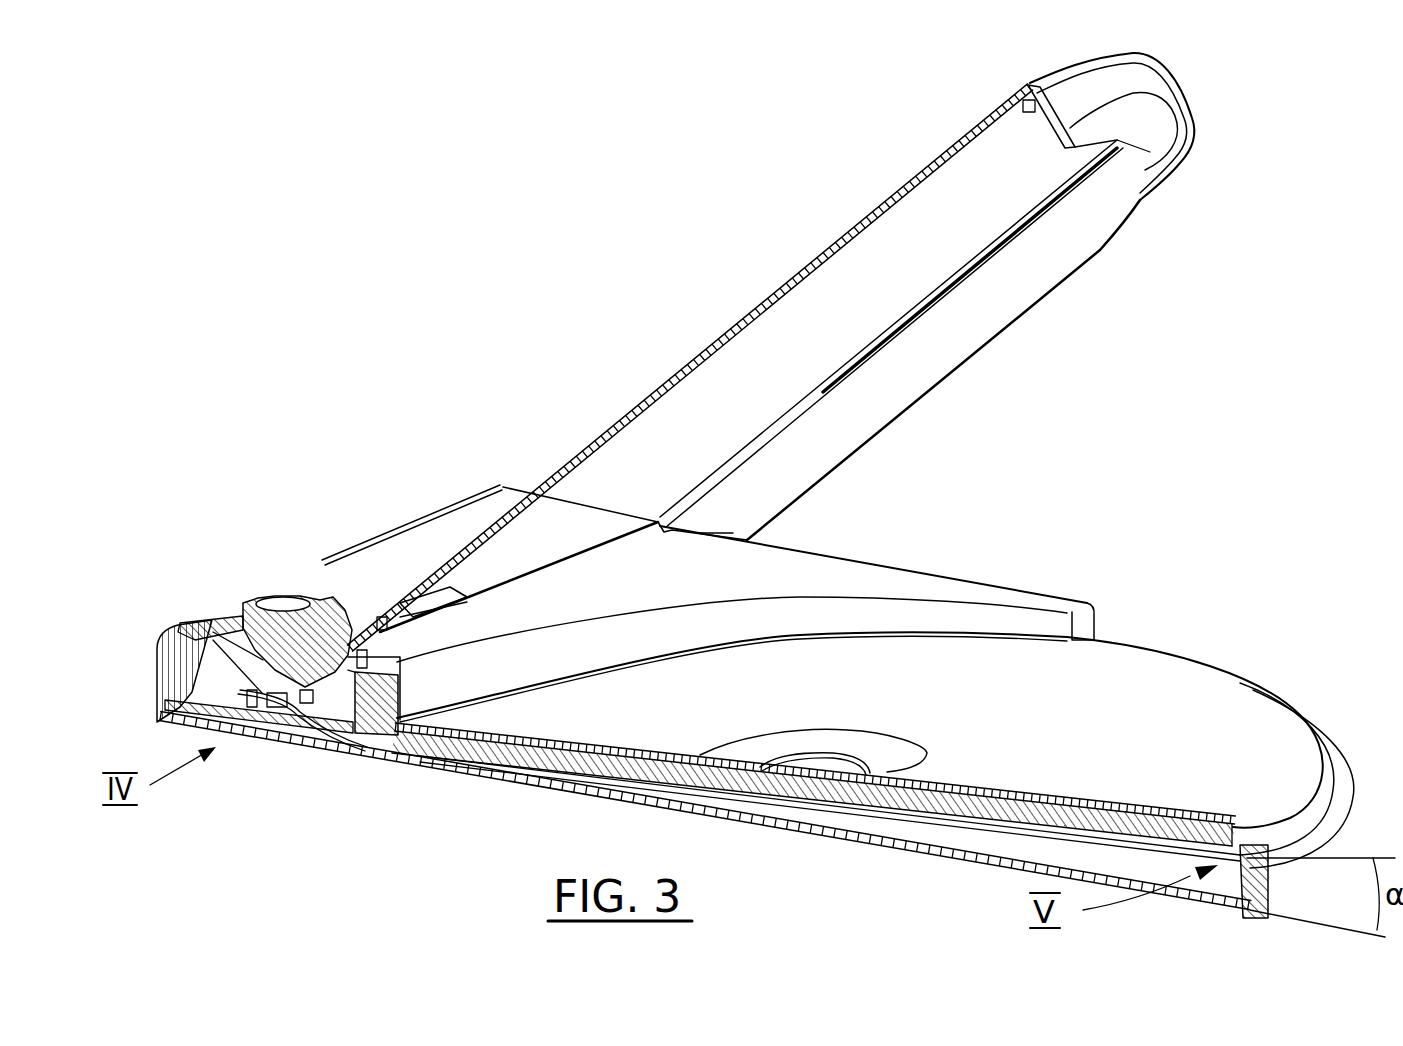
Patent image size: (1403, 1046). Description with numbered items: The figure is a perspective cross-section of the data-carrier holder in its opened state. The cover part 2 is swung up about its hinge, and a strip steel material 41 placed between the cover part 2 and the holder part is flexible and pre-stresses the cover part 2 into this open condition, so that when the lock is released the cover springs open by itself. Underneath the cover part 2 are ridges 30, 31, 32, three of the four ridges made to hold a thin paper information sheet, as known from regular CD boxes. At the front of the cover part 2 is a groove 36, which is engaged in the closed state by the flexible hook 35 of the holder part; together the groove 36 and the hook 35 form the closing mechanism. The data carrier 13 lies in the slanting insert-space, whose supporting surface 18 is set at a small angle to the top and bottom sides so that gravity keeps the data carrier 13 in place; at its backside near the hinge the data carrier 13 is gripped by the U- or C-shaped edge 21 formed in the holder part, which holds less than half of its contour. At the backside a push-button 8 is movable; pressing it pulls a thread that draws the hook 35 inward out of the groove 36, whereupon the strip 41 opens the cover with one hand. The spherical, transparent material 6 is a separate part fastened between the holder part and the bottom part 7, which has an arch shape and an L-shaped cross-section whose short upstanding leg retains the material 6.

The cover part 2 is at (1100, 250).
The spherical material 6 is at (182, 630).
The bottom part 7 is at (1007, 860).
The push-button 8 is at (274, 600).
The data carrier 13 is at (1177, 667).
The supporting surface 18 is at (822, 790).
The edge 21 is at (415, 716).
The ridge 30 is at (492, 568).
The ridge 31 is at (905, 333).
The ridge 32 is at (1030, 123).
The flexible hook 35 is at (1277, 873).
The groove 36 is at (1076, 124).
The strip steel material 41 is at (352, 625).